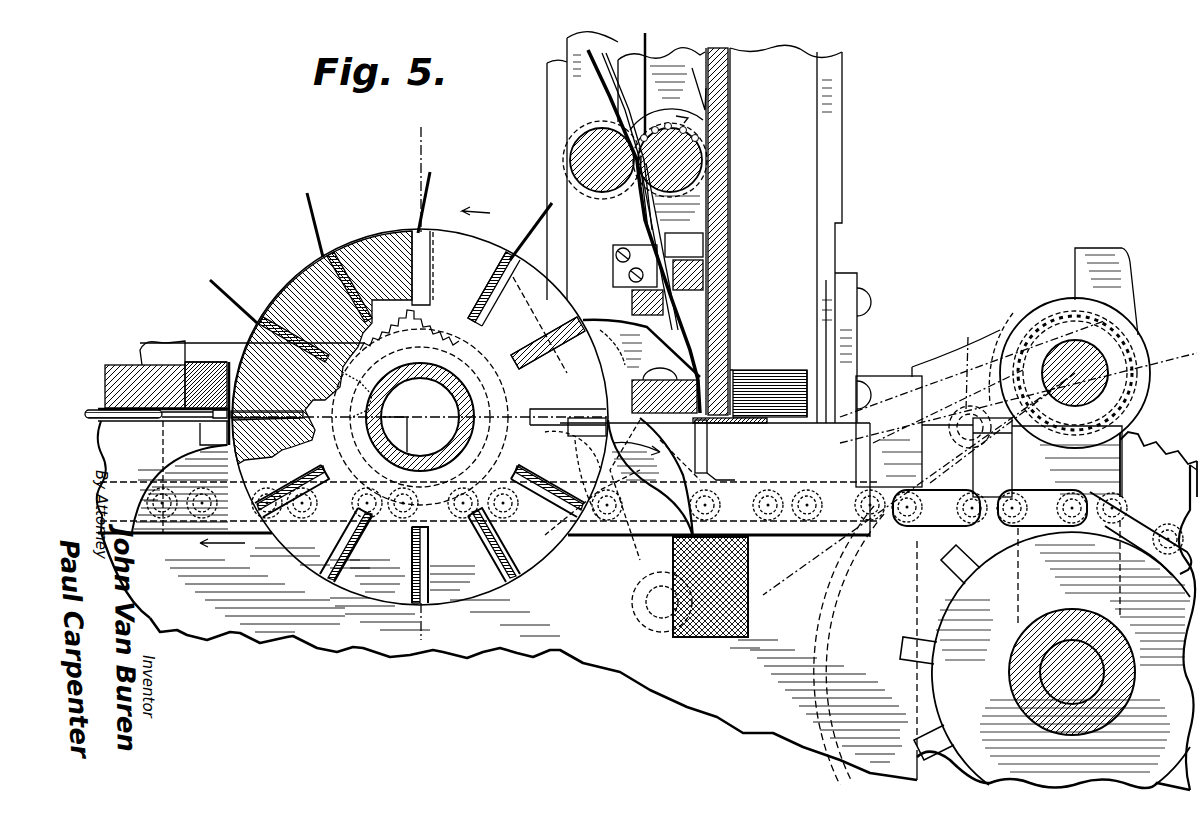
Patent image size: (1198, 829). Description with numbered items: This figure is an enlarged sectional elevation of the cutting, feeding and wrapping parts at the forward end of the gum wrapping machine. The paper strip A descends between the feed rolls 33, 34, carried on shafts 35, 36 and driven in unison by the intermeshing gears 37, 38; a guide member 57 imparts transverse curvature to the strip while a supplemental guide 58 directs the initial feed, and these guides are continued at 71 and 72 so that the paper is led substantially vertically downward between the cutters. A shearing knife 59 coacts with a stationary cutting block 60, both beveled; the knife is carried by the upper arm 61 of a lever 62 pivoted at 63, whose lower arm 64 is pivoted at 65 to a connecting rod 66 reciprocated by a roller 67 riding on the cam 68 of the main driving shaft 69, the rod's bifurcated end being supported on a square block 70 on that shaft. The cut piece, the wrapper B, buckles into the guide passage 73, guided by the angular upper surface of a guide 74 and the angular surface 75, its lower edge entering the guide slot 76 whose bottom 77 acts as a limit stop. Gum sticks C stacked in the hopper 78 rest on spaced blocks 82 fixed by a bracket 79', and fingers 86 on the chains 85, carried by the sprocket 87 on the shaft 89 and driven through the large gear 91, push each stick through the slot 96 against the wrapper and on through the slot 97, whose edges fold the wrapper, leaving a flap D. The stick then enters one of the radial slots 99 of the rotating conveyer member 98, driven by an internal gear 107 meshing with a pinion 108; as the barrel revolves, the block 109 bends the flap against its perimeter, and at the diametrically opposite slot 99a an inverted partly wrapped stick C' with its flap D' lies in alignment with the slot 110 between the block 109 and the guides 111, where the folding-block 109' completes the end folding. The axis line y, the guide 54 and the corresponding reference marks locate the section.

The feed roll 33 is at (705, 165).
The feed roll 34 is at (590, 165).
The shaft 35 is at (725, 128).
The shaft 36 is at (562, 178).
The gear 37 is at (728, 105).
The gear 38 is at (630, 130).
The guide plate 54 is at (567, 82).
The guide member 57 is at (647, 40).
The supplemental guide 58 is at (612, 141).
The shearing knife 59 is at (630, 290).
The stationary cutting block 60 is at (705, 270).
The upper arm 61 is at (620, 352).
The lever 62 is at (628, 548).
The pivot 63 is at (600, 550).
The lower arm 64 is at (632, 580).
The pivot 65 is at (660, 625).
The connecting rod 66 is at (830, 570).
The roller 67 is at (980, 457).
The cam 68 is at (1063, 363).
The main driving shaft 69 is at (1090, 360).
The square block 70 is at (1140, 355).
The guide continuation 71 is at (670, 222).
The guide continuation 72 is at (650, 212).
The guide passage 73 is at (745, 370).
The guide 74 is at (705, 378).
The angular surface 75 is at (650, 477).
The guide slot 76 is at (707, 460).
The slot bottom 77 is at (731, 481).
The hopper 78 is at (835, 158).
The bracket 79' is at (872, 332).
The spaced blocks 82 is at (860, 400).
The chains 85 is at (1155, 525).
The fingers 86 is at (689, 500).
The sprocket 87 is at (1045, 652).
The shaft 89 is at (1048, 685).
The large gear 91 is at (1150, 445).
The slot 96 is at (730, 429).
The slot 97 is at (715, 413).
The rotating conveyer member 98 is at (374, 383).
The slots 99 is at (505, 470).
The diametrically opposite slot 99a is at (352, 395).
The internal gear 107 is at (486, 300).
The pinion 108 is at (462, 220).
The block 109 is at (198, 356).
The folding-block 109' is at (159, 361).
The slot 110 is at (490, 484).
The guides 111 is at (646, 605).
The paper strip A is at (602, 60).
The wrapper B is at (84, 412).
The gum stick C is at (768, 378).
The partly wrapped gum stick C' is at (272, 441).
The flap D is at (455, 274).
The flap D' is at (218, 383).
The axis y is at (421, 378).